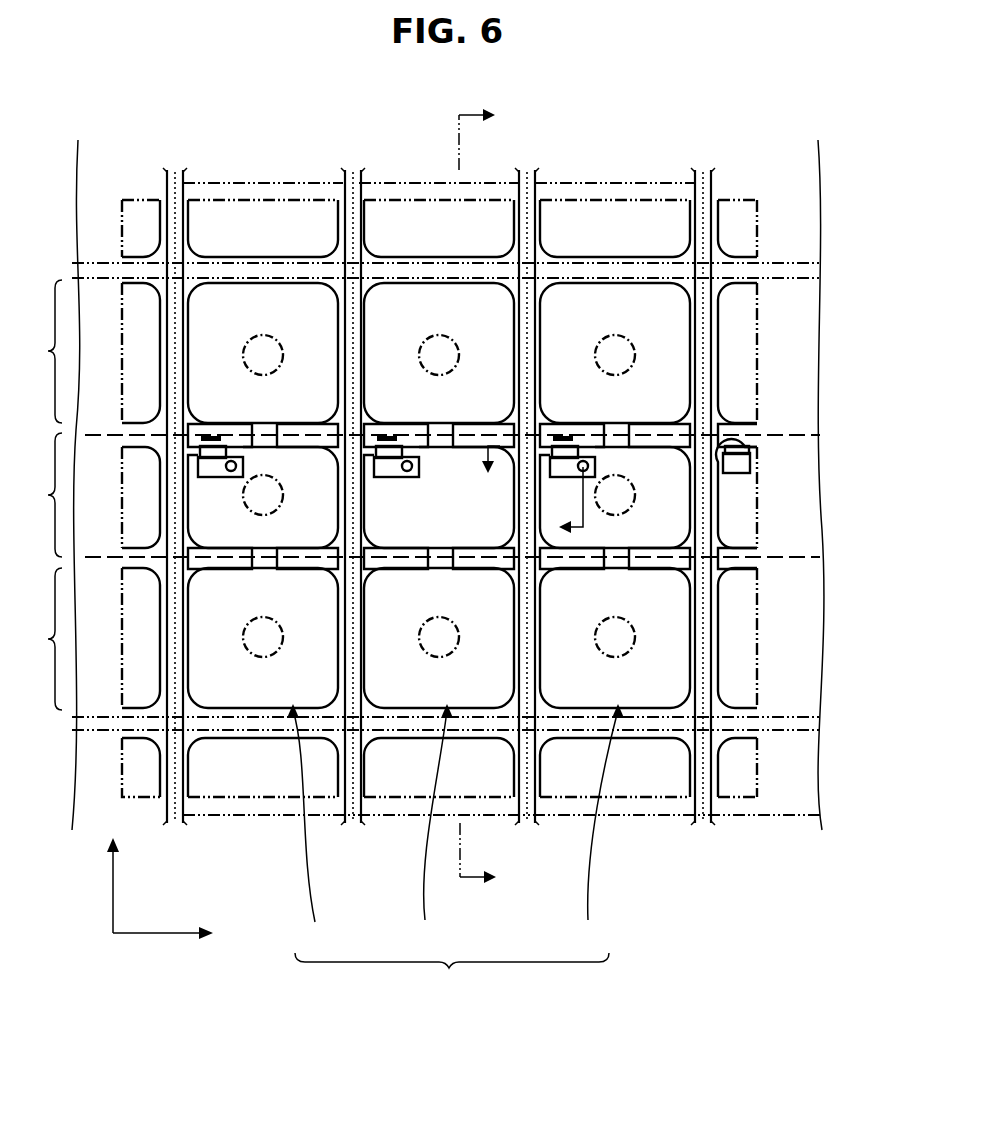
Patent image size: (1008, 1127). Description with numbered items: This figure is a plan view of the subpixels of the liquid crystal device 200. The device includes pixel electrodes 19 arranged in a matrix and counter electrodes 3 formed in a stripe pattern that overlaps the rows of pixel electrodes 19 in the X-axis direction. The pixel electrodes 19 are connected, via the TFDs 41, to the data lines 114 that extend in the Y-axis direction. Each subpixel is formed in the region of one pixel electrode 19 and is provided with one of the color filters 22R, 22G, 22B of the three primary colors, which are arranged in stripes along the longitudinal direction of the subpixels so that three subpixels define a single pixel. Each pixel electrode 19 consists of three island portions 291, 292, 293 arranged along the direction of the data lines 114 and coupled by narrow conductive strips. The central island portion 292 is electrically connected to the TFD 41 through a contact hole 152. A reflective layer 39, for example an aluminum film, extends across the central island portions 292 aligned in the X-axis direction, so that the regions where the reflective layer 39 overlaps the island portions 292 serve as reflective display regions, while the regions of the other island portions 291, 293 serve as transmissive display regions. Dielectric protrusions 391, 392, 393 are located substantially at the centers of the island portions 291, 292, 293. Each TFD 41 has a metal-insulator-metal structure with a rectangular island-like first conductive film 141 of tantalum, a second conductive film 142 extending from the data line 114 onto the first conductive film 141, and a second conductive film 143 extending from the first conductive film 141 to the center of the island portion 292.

The liquid crystal device 200 is at (458, 540).
The counter electrode 3 is at (798, 680).
The data line 114 is at (167, 176).
The red color filter 22R is at (232, 182).
The green color filter 22G is at (390, 182).
The blue color filter 22B is at (590, 182).
The pixel electrode 19 is at (713, 353).
The island portion 291 is at (683, 387).
The central island portion 292 is at (680, 523).
The island portion 293 is at (680, 645).
The dielectric protrusion 391 is at (623, 349).
The dielectric protrusion 392 is at (632, 495).
The dielectric protrusion 393 is at (630, 632).
The reflective layer 39 is at (777, 549).
The TFD 41 is at (536, 456).
The first conductive film 141 is at (392, 447).
The second conductive film 142 is at (385, 437).
The second conductive film 143 is at (402, 477).
The contact hole 152 is at (410, 462).